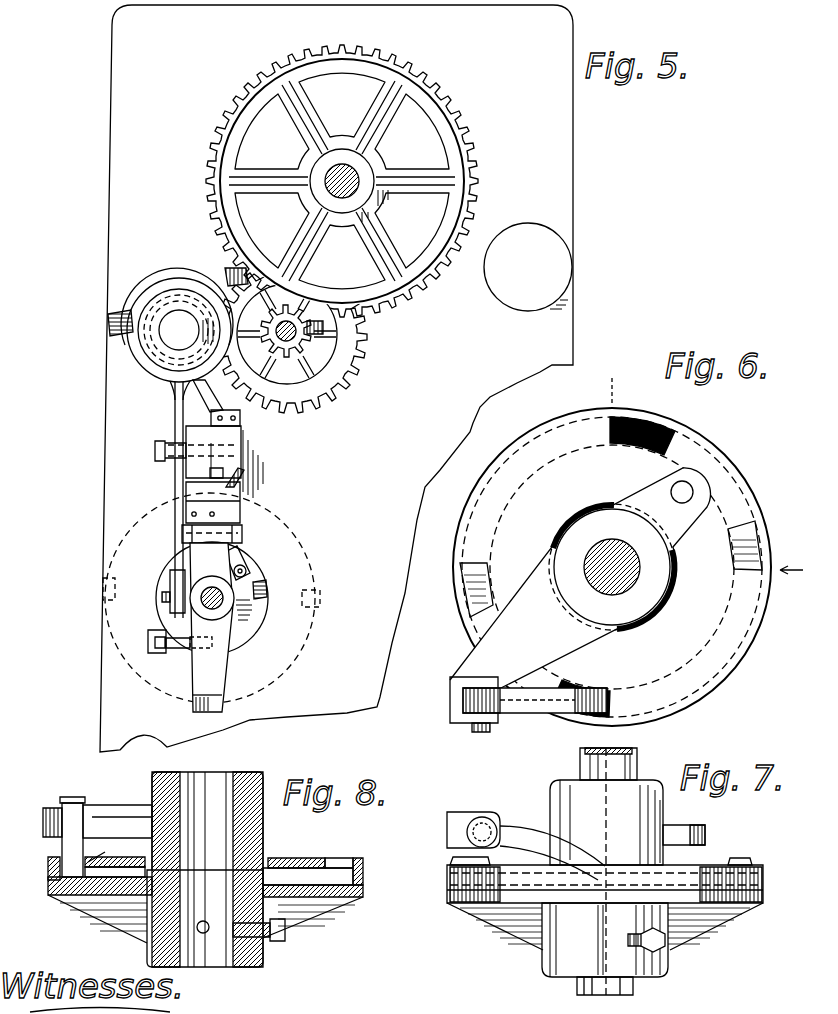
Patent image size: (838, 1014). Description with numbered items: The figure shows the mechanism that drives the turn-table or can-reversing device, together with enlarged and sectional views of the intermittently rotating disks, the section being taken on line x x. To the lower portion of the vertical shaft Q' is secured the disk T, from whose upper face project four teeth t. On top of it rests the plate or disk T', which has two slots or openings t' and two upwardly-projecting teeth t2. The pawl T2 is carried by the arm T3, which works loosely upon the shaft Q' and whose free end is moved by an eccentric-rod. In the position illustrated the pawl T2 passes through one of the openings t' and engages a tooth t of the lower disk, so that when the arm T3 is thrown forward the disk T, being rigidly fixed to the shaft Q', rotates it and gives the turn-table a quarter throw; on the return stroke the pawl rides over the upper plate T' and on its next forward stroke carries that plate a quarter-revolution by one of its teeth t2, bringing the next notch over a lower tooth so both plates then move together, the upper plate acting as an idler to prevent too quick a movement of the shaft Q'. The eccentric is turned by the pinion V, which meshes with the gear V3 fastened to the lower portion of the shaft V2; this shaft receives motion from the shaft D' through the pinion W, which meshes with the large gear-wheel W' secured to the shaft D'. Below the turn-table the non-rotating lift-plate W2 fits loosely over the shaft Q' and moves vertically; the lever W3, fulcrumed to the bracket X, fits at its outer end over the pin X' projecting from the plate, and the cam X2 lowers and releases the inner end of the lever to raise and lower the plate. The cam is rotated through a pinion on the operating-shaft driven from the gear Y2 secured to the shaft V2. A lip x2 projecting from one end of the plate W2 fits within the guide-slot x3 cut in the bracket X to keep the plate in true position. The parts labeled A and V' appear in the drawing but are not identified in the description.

In FIG. 5, the frame A is at (560, 148).
In FIG. 5, the shaft D' is at (328, 180).
In FIG. 5, the large gear-wheel W' is at (342, 181).
In FIG. 5, the pinion W is at (299, 341).
In FIG. 5, the pinion V is at (145, 325).
In FIG. 5, the shaft V2 is at (300, 328).
In FIG. 5, the gear V3 is at (322, 368).
In FIG. 5, the gear Y2 is at (244, 284).
In FIG. 5, the cam X2 is at (162, 367).
In FIG. 5, the pin X' is at (156, 500).
In FIG. 5, the bracket X is at (217, 462).
In FIG. 5, the guide-slot x3 is at (240, 470).
In FIG. 5, the lip x2 is at (243, 482).
In FIG. 5, the lever W3 is at (176, 508).
In FIG. 5, the pawl V' is at (254, 553).
In FIG. 5, the upwardly-projecting teeth t2 is at (268, 590).
In FIG. 6, the upwardly-projecting teeth t2 is at (757, 532).
In FIG. 7, the upwardly-projecting teeth t2 is at (455, 860).
In FIG. 5, the vertical shaft Q' is at (253, 599).
In FIG. 6, the vertical shaft Q' is at (626, 567).
In FIG. 7, the vertical shaft Q' is at (632, 863).
In FIG. 5, the disk T is at (226, 598).
In FIG. 7, the disk T is at (599, 907).
In FIG. 8, the disk T is at (220, 910).
In FIG. 5, the pawl T2 is at (180, 648).
In FIG. 6, the pawl T2 is at (532, 705).
In FIG. 7, the pawl T2 is at (507, 843).
In FIG. 8, the pawl T2 is at (70, 850).
In FIG. 5, the arm T3 is at (160, 640).
In FIG. 6, the arm T3 is at (580, 579).
In FIG. 7, the arm T3 is at (460, 812).
In FIG. 8, the arm T3 is at (105, 822).
In FIG. 5, the lift-plate W2 is at (215, 672).
In FIG. 6, the section line x is at (606, 554).
In FIG. 6, the slots or openings t' is at (618, 550).
In FIG. 8, the slots or openings t' is at (221, 848).
In FIG. 7, the plate or disk T' is at (646, 878).
In FIG. 8, the plate or disk T' is at (219, 869).
In FIG. 7, the teeth t is at (601, 891).
In FIG. 8, the teeth t is at (209, 889).